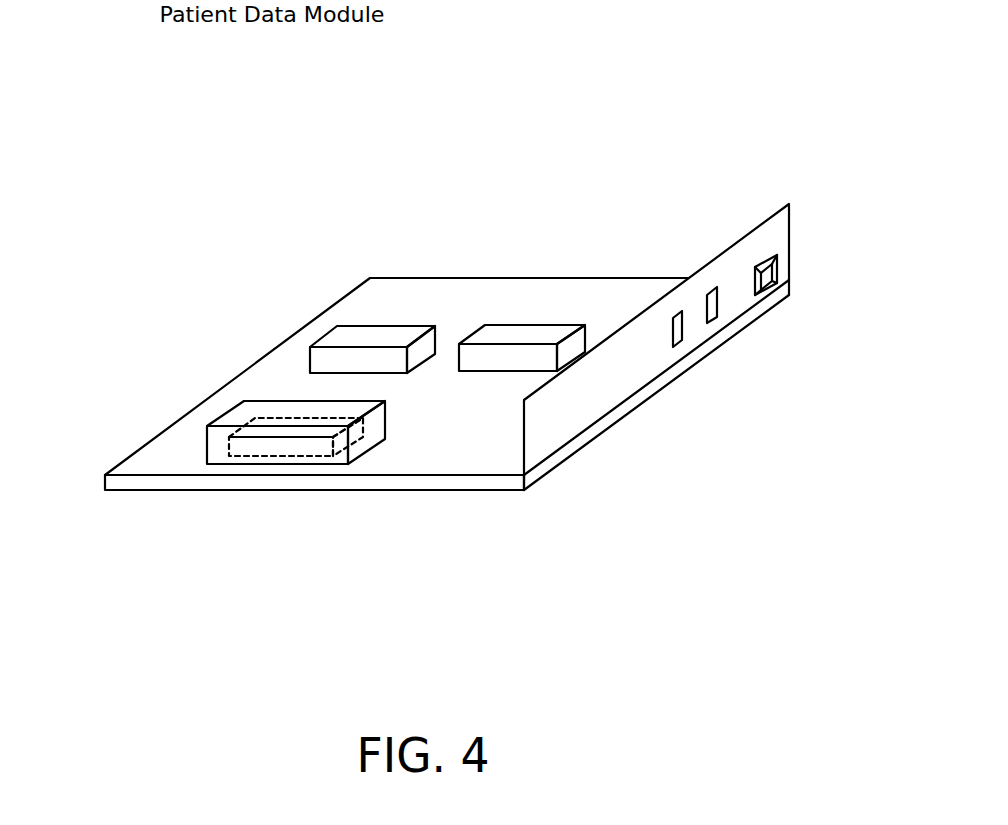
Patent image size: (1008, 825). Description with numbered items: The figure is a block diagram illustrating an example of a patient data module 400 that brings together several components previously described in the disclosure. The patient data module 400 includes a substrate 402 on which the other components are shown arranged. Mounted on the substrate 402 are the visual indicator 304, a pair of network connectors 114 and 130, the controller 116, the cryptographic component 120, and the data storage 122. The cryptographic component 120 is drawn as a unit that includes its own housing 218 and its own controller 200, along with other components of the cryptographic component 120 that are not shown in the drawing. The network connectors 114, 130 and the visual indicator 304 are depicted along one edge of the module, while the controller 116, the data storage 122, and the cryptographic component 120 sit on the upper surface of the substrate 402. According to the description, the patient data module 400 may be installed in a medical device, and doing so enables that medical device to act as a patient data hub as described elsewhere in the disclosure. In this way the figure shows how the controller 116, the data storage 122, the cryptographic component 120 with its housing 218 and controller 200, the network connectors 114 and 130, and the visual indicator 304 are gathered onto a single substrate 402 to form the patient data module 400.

The patient data module 400 is at (388, 144).
The substrate 402 is at (587, 287).
The cryptographic component 120 is at (235, 402).
The housing 218 is at (208, 445).
The controller 200 is at (348, 460).
The data storage 122 is at (403, 325).
The controller 116 is at (532, 323).
The network connector 114 is at (707, 323).
The network connector 130 is at (673, 347).
The visual indicator 304 is at (773, 287).